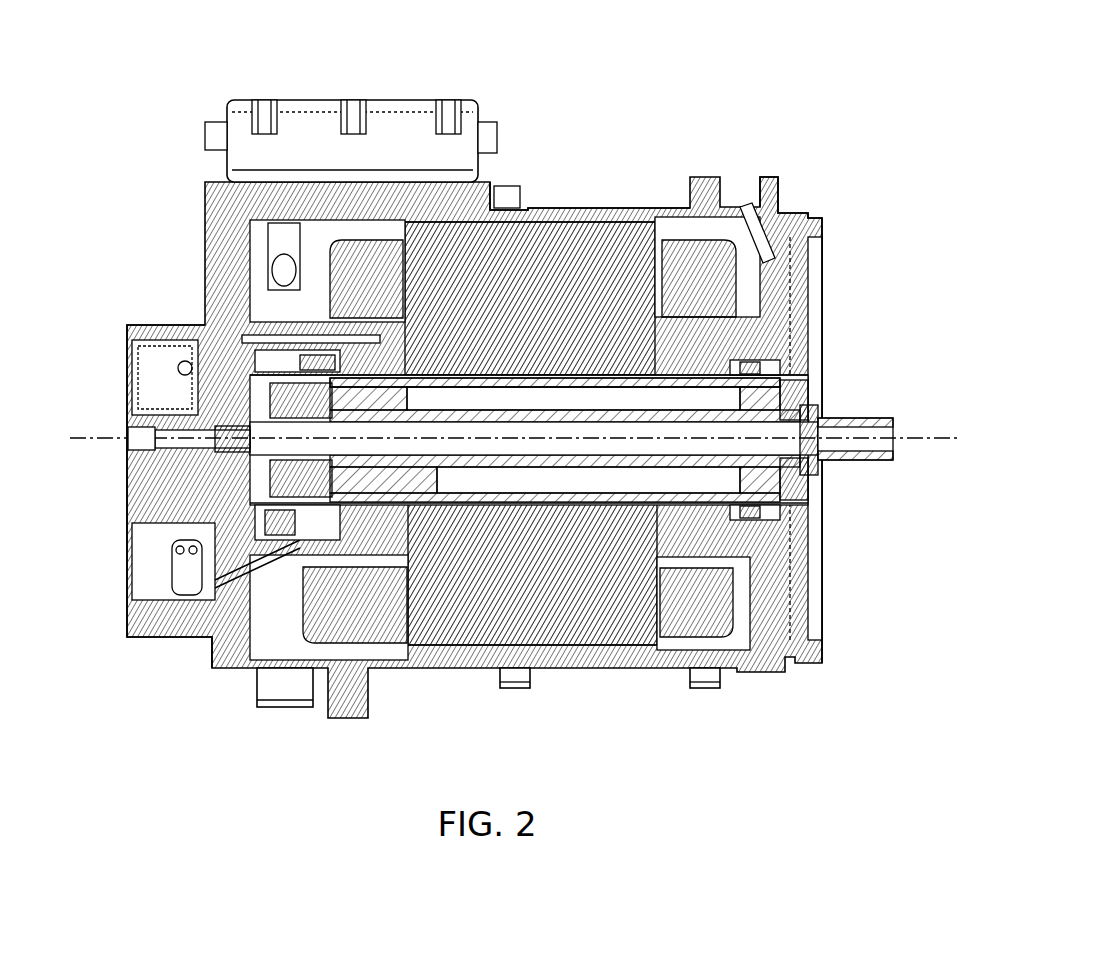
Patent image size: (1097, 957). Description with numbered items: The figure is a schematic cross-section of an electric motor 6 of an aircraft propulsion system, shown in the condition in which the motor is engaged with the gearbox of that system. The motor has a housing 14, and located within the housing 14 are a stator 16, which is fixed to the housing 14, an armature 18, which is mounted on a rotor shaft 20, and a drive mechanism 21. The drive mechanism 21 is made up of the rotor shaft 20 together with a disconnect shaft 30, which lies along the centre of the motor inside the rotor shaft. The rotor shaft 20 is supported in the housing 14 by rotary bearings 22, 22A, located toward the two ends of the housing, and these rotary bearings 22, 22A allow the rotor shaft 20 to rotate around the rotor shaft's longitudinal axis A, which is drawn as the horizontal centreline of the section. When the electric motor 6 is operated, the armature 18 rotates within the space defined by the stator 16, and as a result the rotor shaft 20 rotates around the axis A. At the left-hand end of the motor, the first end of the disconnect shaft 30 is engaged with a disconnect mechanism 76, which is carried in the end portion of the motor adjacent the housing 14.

The electric motor 6 is at (843, 213).
The housing 14 is at (778, 205).
The stator 16 is at (563, 207).
The armature 18 is at (605, 270).
The rotor shaft 20 is at (530, 208).
The drive mechanism 21 is at (454, 356).
The rotary bearing 22 is at (330, 373).
The rotary bearing 22A is at (762, 373).
The disconnect shaft 30 is at (528, 470).
The disconnect mechanism 76 is at (135, 513).
The longitudinal axis A is at (903, 438).